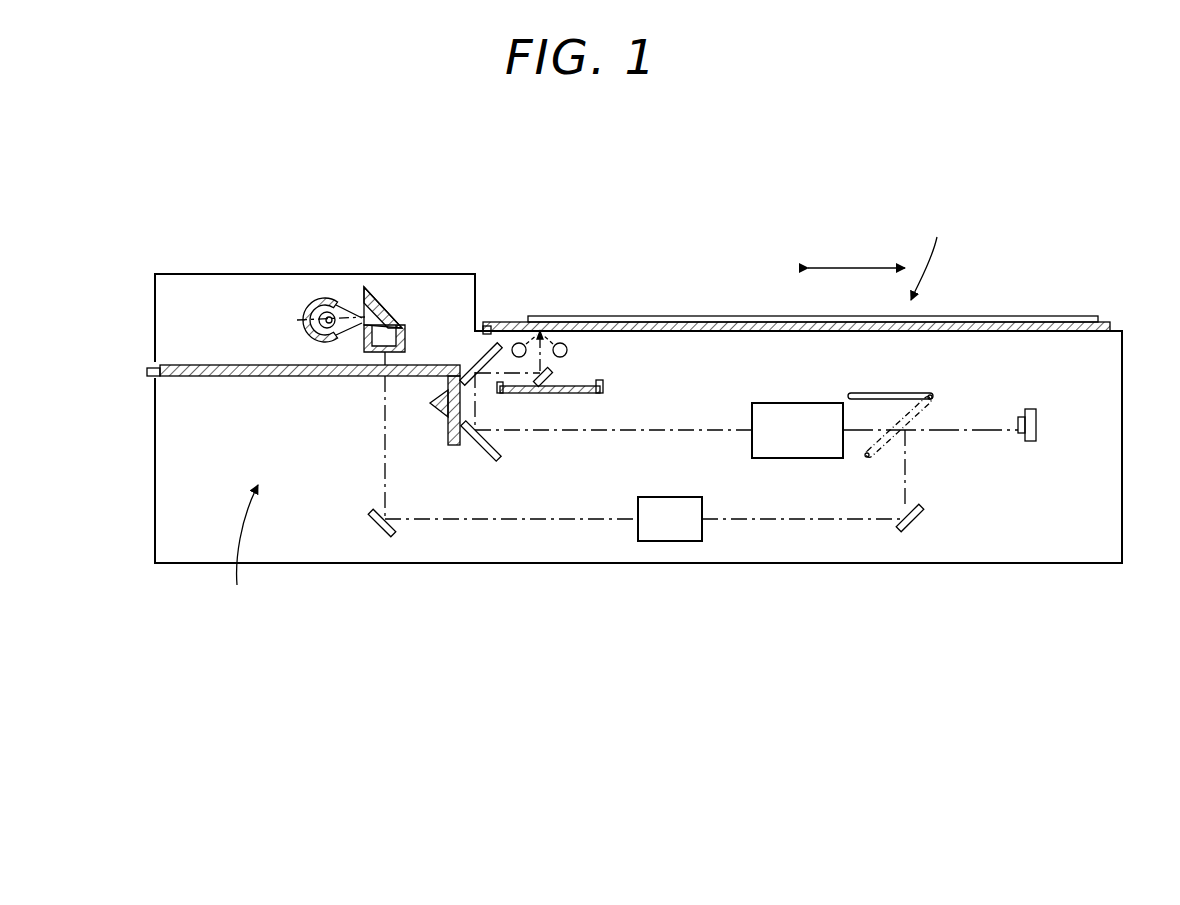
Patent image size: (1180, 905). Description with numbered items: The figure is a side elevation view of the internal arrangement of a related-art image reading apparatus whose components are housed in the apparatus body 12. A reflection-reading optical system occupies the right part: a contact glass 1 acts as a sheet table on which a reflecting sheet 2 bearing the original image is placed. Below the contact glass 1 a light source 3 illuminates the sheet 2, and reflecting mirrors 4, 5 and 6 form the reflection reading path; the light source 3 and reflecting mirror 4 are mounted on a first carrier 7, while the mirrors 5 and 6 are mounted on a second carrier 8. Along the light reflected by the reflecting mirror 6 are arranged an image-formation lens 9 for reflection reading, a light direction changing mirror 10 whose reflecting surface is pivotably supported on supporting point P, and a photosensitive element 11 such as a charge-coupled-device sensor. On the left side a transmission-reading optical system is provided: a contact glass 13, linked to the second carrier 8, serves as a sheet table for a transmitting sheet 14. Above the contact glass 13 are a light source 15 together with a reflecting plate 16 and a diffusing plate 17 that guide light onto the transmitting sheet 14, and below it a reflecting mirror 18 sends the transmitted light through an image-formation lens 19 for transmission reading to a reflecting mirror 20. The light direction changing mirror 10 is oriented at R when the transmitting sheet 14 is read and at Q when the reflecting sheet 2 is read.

The contact glass 1 is at (1068, 316).
The sheet 2 is at (903, 390).
The light source 3 is at (518, 342).
The reflecting mirror 4 is at (553, 372).
The reflecting mirror 5 is at (494, 340).
The reflecting mirror 6 is at (485, 462).
The first carrier 7 is at (605, 393).
The second carrier 8 is at (494, 412).
The image-formation lens 9 is at (780, 403).
The light direction changing mirror 10 is at (963, 342).
The photosensitive element 11 is at (1036, 425).
The apparatus body 12 is at (1176, 445).
The contact glass 13 is at (185, 380).
The sheet 14 is at (237, 365).
The light source 15 is at (320, 300).
The reflecting plate 16 is at (388, 298).
The diffusing plate 17 is at (405, 338).
The reflecting mirror 18 is at (383, 535).
The image-formation lens 19 is at (668, 541).
The reflecting mirror 20 is at (915, 530).